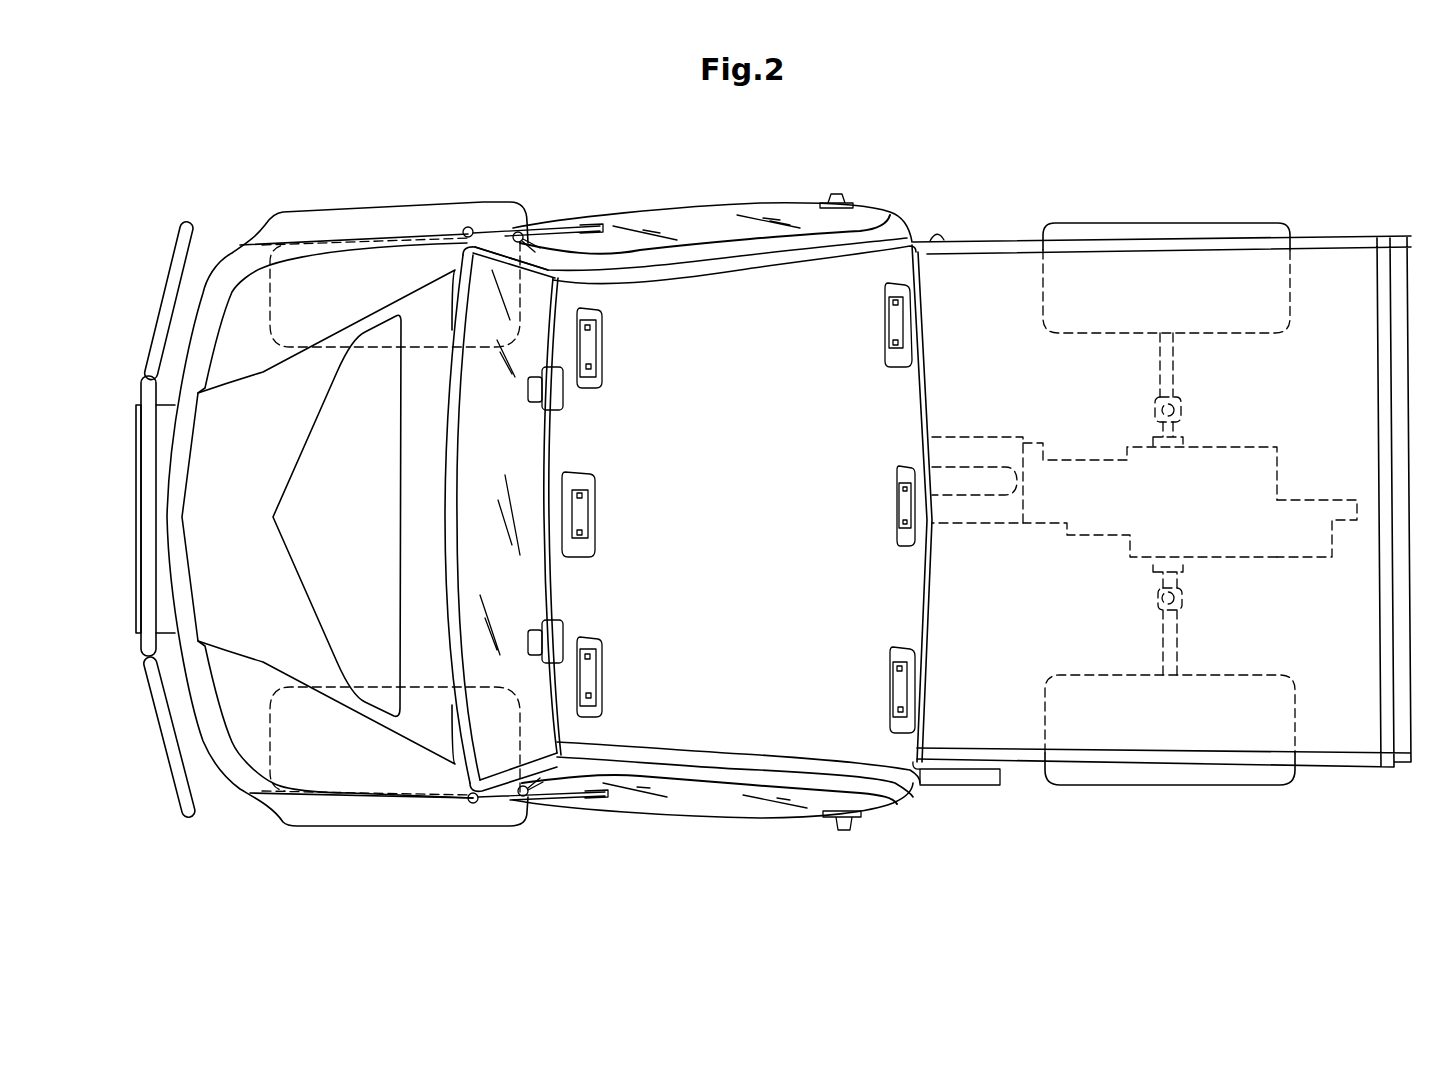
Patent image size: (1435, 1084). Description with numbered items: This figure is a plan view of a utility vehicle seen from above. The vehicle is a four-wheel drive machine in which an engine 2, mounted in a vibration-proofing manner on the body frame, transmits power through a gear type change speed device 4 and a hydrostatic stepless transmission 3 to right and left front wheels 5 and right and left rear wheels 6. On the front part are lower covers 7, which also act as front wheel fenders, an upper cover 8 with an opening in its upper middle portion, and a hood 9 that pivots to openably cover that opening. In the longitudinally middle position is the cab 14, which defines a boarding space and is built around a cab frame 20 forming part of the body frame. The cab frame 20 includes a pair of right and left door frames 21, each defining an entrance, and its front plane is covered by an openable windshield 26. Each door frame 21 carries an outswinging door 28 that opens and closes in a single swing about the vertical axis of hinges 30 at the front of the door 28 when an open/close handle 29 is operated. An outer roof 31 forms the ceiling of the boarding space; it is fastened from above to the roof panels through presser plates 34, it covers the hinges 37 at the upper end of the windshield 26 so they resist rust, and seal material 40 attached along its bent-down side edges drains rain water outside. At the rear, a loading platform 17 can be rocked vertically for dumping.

The engine 2 is at (972, 437).
The hydrostatic stepless transmission 3 is at (1300, 557).
The gear type change speed device 4 is at (1243, 445).
The front wheels 5 is at (270, 292).
The rear wheels 6 is at (1165, 222).
The lower covers 7 is at (325, 211).
The upper cover 8 is at (383, 262).
The hood 9 is at (332, 332).
The cab 14 is at (777, 846).
The loading platform 17 is at (1328, 238).
The cab frame 20 is at (911, 238).
The door frames 21 is at (631, 255).
The windshield 26 is at (475, 508).
The doors 28 is at (752, 207).
The open/close handle 29 is at (841, 196).
The hinges 30 is at (555, 225).
The outer roof 31 is at (863, 580).
The presser plates 34 is at (598, 335).
The hinges 37 is at (528, 390).
The seal material 40 is at (693, 263).